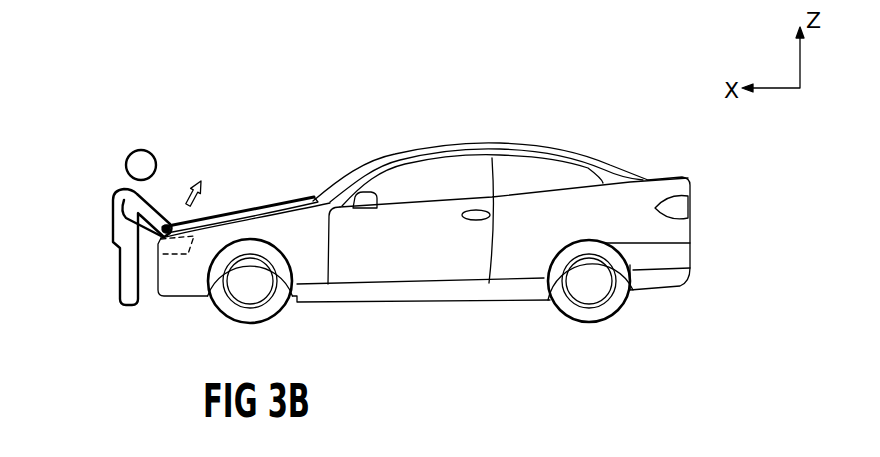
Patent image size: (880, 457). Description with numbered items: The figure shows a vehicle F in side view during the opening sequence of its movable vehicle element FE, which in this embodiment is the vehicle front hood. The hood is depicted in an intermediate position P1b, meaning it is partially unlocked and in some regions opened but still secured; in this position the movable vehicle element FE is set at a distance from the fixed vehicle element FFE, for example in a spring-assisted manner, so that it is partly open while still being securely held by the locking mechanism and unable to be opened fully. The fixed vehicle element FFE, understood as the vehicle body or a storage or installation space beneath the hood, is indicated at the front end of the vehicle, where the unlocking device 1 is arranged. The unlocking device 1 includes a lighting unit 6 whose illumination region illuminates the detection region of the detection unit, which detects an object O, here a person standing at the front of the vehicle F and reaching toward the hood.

The object O is at (136, 148).
The vehicle F is at (556, 145).
The movable vehicle element FE is at (269, 179).
The intermediate position P1b is at (281, 146).
The lighting unit 6 is at (162, 225).
The fixed vehicle element FFE is at (167, 252).
The unlocking device 1 is at (181, 253).